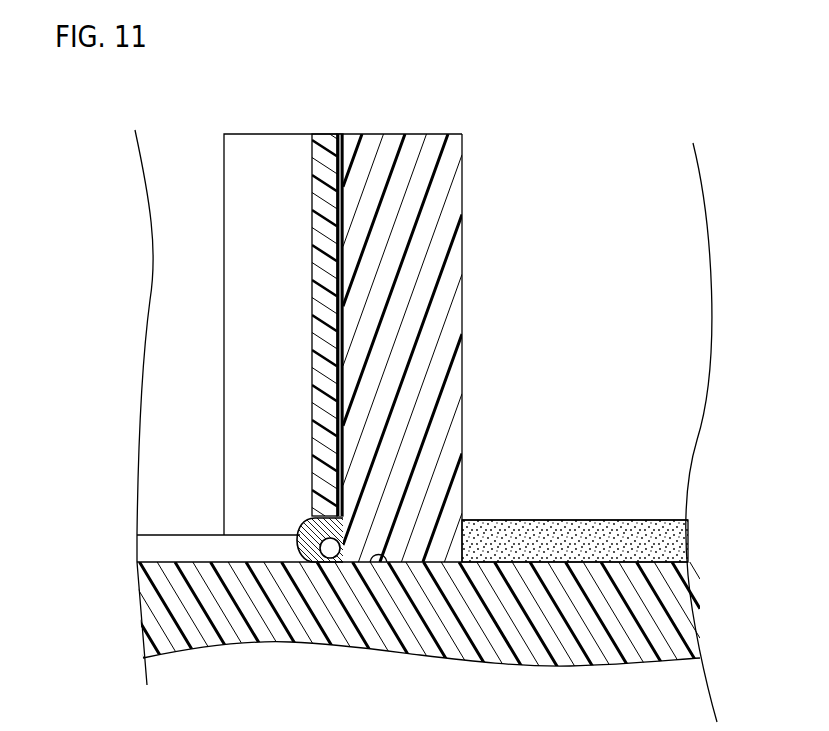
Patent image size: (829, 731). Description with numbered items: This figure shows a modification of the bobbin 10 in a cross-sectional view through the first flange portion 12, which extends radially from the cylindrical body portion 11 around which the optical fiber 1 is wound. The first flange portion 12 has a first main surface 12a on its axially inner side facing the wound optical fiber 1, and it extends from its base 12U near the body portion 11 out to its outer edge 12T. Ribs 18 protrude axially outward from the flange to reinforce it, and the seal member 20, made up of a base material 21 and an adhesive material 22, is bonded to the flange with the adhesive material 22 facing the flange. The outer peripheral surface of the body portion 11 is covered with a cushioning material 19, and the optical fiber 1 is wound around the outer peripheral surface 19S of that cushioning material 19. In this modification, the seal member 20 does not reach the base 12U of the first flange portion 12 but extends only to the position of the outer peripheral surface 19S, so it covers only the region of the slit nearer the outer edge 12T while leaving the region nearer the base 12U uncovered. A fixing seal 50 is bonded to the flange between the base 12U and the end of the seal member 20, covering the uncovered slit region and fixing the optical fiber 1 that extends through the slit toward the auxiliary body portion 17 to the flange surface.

The optical fiber 1 is at (165, 543).
The bobbin 10 is at (609, 168).
The body portion 11 is at (647, 647).
The first flange portion 12 is at (427, 384).
The outer edge 12T is at (419, 133).
The first main surface 12a is at (463, 365).
The base 12U is at (380, 556).
The auxiliary body portion 17 is at (202, 627).
The ribs 18 is at (242, 160).
The cushioning material 19 is at (602, 496).
The outer peripheral surface 19S is at (608, 520).
The seal member 20 is at (327, 283).
The base material 21 is at (320, 137).
The adhesive material 22 is at (337, 137).
The fixing seal 50 is at (303, 532).